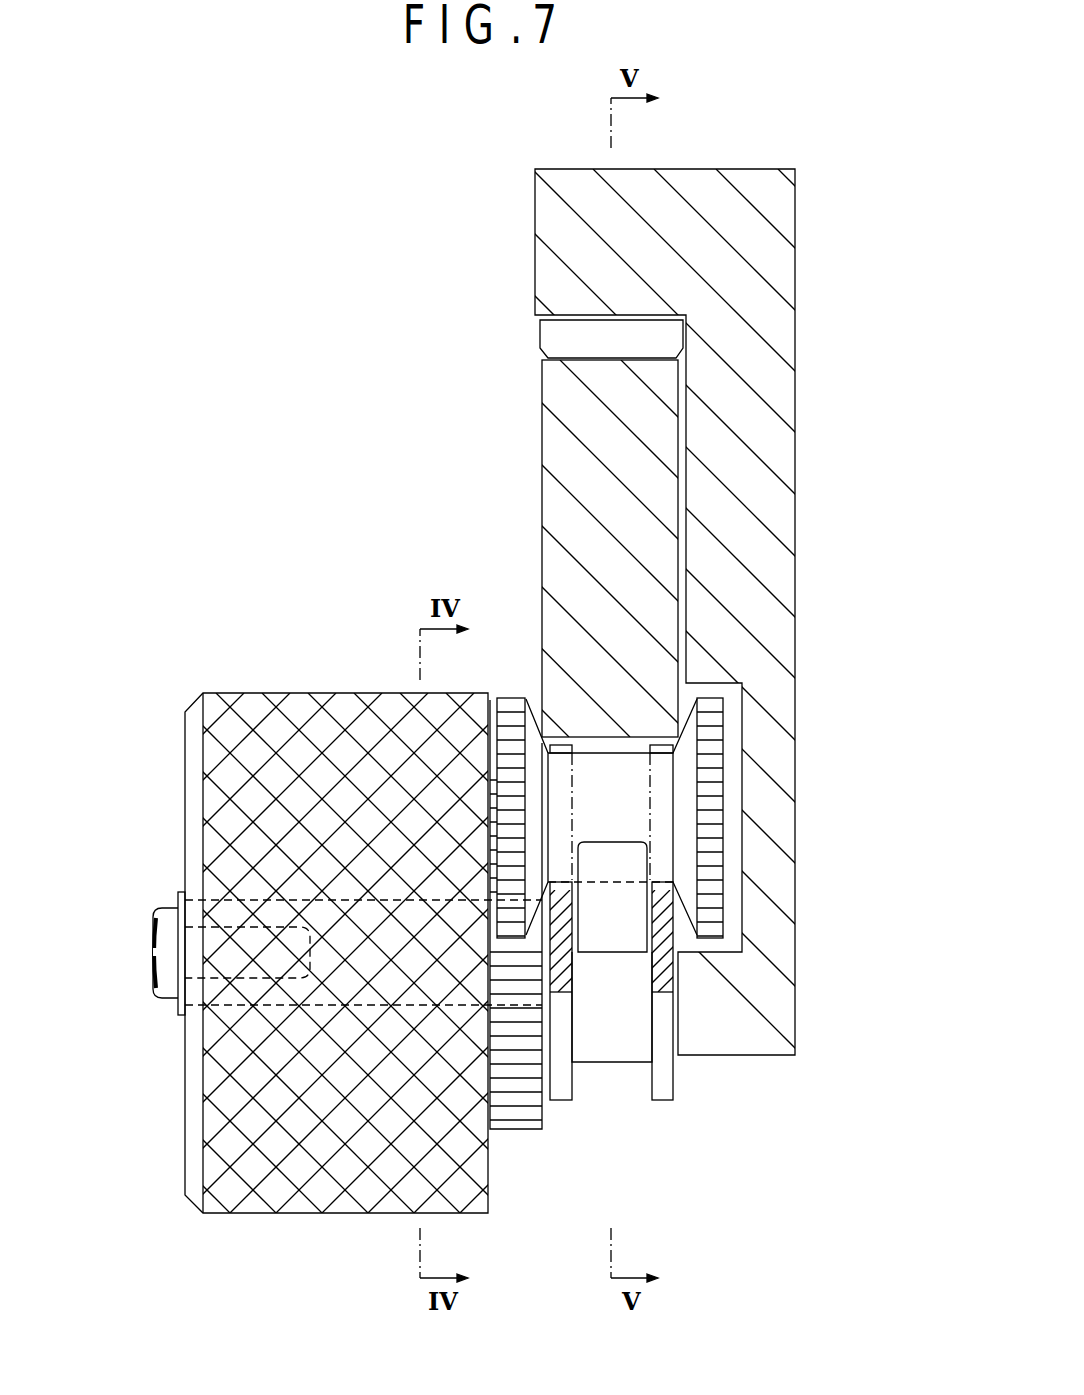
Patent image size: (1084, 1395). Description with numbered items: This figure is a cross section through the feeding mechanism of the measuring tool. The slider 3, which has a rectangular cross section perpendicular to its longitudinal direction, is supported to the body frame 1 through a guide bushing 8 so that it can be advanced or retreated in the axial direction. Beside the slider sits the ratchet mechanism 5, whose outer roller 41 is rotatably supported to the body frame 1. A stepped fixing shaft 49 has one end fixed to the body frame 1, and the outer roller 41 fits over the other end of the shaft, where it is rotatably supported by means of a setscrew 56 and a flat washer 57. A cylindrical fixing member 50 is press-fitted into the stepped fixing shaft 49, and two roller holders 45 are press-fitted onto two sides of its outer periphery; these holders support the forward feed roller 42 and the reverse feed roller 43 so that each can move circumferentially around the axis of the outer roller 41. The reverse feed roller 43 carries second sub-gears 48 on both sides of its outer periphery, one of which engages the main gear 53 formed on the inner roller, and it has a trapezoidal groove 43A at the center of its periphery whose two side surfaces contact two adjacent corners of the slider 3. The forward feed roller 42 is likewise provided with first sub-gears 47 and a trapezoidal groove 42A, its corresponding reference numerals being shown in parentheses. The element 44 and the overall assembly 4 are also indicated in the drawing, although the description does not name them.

The body frame 1 is at (535, 245).
The guide bushing 8 is at (540, 332).
The slider 3 is at (541, 430).
The ratchet mechanism 5 is at (490, 896).
The outer roller 41 is at (302, 693).
The flat washer 57 is at (178, 894).
The setscrew 56 is at (152, 936).
The stepped fixing shaft 49 is at (265, 1010).
The second sub-gears 48 is at (686, 740).
The first sub-gears 47 is at (516, 697).
The main gear 53 is at (515, 1130).
The reverse feed roller 43 is at (733, 817).
The forward feed roller 42 is at (733, 817).
The trapezoidal groove 43A is at (745, 736).
The trapezoidal groove 42A is at (645, 749).
The shaft end 44 is at (635, 865).
The cylindrical fixing member 50 is at (612, 1062).
The roller holders 45 is at (560, 1100).
The roller unit 4 is at (126, 1234).